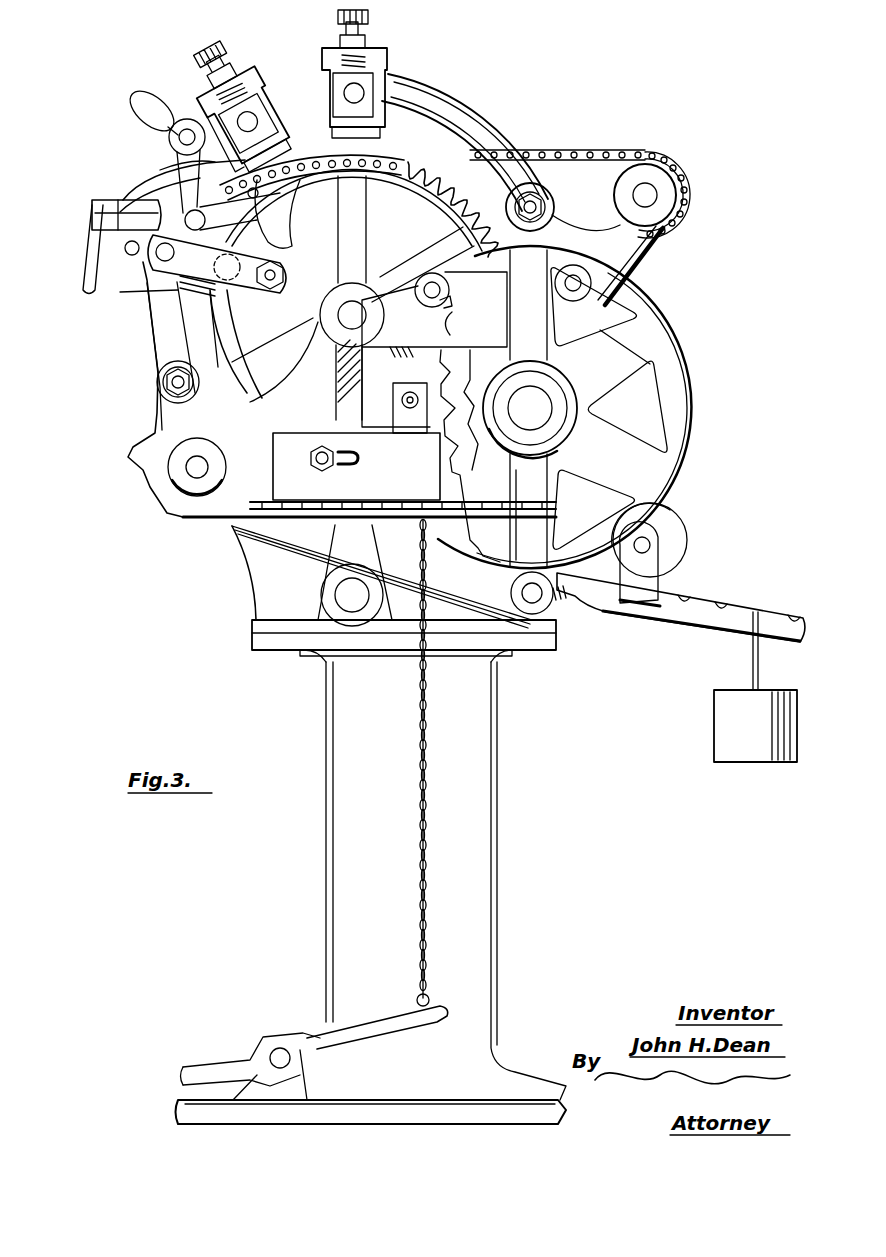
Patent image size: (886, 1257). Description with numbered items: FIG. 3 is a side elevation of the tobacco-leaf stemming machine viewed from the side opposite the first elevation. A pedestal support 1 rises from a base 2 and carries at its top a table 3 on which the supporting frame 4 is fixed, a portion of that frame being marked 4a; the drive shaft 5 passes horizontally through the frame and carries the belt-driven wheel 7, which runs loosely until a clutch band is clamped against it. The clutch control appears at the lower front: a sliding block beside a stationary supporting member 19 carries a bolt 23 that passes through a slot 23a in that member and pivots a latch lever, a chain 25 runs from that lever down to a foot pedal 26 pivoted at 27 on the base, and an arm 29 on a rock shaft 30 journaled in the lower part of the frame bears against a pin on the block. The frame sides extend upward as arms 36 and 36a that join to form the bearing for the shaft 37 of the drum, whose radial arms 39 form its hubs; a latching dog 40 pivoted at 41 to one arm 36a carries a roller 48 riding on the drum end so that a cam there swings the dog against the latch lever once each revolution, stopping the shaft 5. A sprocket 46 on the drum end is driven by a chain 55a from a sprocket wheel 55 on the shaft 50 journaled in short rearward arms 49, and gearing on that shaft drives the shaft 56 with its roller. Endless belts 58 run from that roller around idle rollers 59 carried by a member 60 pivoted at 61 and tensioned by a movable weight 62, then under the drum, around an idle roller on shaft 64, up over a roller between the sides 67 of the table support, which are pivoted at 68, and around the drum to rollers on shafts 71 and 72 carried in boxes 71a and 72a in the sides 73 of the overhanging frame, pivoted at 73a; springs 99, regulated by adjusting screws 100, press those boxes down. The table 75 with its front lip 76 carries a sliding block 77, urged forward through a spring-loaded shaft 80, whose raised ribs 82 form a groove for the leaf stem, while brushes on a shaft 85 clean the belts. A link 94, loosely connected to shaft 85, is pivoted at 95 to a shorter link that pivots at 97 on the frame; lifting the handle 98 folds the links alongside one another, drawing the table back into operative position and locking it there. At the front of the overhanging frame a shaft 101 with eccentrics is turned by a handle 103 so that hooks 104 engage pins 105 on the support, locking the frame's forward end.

The pedestal support 1 is at (478, 866).
The base 2 is at (392, 1112).
The table 3 is at (526, 648).
The supporting frame 4 is at (278, 565).
The neck of frame 4a is at (228, 524).
The drive shaft 5 is at (538, 405).
The wheel 7 is at (672, 342).
The supporting member 19 is at (320, 512).
The bolt 23 is at (318, 462).
The slot 23a is at (358, 466).
The chain 25 is at (420, 816).
The foot pedal 26 is at (350, 1030).
The pivot 27 is at (282, 1048).
The arm 29 is at (366, 548).
The rock shaft 30 is at (352, 600).
The arm 36 is at (338, 268).
The arm 36a is at (408, 340).
The shaft 37 is at (348, 322).
The radial arms 39 is at (356, 218).
The latching dog 40 is at (452, 334).
The pivot 41 is at (450, 294).
The sprocket 46 is at (400, 190).
The roller 48 is at (410, 434).
The short arms 49 is at (632, 258).
The shaft 50 is at (650, 197).
The sprocket wheel 55 is at (622, 158).
The chain 55a is at (534, 152).
The shaft 56 is at (574, 292).
The endless belts 58 is at (652, 416).
The idle rollers 59 is at (676, 540).
The member 60 is at (660, 628).
The pivot 61 is at (538, 598).
The weight 62 is at (724, 704).
The shaft 64 is at (194, 472).
The sides 67 is at (150, 292).
The pivot 68 is at (175, 386).
The shaft 71 is at (258, 122).
The box 71a is at (262, 102).
The shaft 72 is at (360, 92).
The box 72a is at (380, 120).
The sides 73 is at (430, 112).
The pivotal connection 73a is at (547, 204).
The table 75 is at (135, 214).
The lip 76 is at (86, 258).
The block 77 is at (132, 186).
The shaft 80 is at (130, 255).
The raised ribs 82 is at (160, 170).
The shaft 85 is at (140, 292).
The link 94 is at (184, 268).
The pivotal connection 95 is at (270, 286).
The pivotal connection 97 is at (208, 296).
The handle 98 is at (282, 244).
The springs 99 is at (368, 60).
The adjusting screws 100 is at (362, 30).
The shaft 101 is at (186, 130).
The operating handle 103 is at (138, 108).
The hooks 104 is at (259, 192).
The pins 105 is at (206, 222).